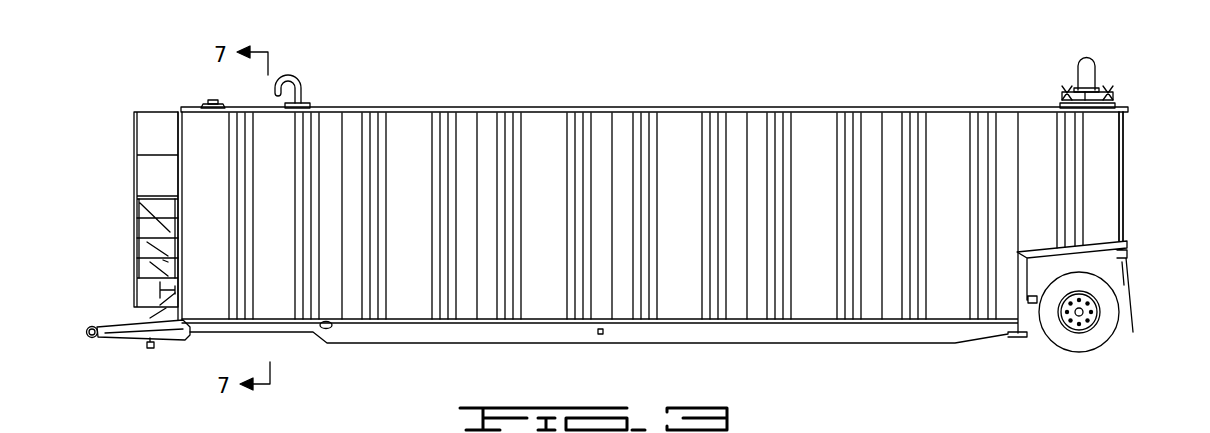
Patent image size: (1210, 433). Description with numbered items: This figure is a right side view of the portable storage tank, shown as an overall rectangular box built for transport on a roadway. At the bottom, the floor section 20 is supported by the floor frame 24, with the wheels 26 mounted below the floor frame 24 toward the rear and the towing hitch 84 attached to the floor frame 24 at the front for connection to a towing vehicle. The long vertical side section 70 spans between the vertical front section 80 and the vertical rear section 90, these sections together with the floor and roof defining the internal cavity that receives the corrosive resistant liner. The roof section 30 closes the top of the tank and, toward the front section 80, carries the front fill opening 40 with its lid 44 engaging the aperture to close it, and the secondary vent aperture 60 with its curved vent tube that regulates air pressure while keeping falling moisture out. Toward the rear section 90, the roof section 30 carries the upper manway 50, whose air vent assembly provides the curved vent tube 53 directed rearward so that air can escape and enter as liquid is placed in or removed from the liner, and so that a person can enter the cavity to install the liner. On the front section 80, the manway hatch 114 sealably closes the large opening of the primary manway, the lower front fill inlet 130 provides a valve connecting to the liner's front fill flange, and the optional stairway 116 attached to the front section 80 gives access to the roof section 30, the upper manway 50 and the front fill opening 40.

The floor section 20 is at (467, 321).
The floor frame 24 is at (878, 343).
The wheels 26 is at (1100, 310).
The roof section 30 is at (813, 110).
The front fill opening 40 is at (206, 105).
The lid 44 is at (212, 100).
The upper manway 50 is at (1115, 95).
The curved vent tube 53 is at (1079, 75).
The secondary vent aperture 60 is at (303, 95).
The vertical side sections 70 is at (680, 139).
The vertical front section 80 is at (178, 140).
The towing hitch 84 is at (150, 350).
The vertical rear section 90 is at (1125, 165).
The manway hatch 114 is at (167, 270).
The stairway 116 is at (137, 232).
The lower front fill inlet 130 is at (157, 290).